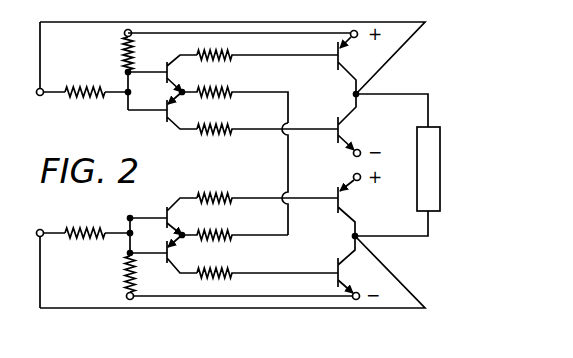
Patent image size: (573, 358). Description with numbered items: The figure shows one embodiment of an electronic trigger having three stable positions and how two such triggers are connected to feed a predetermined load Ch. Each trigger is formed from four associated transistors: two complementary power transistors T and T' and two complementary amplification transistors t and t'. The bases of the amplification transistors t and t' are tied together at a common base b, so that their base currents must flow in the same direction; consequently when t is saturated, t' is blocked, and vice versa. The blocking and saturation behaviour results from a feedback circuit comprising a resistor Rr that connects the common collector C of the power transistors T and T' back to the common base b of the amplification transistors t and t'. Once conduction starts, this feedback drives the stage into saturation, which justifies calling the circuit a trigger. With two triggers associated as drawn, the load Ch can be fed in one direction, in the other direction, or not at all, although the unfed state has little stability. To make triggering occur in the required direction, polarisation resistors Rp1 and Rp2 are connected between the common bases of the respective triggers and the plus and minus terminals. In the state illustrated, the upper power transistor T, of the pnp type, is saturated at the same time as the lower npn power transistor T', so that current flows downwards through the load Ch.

The polarisation resistor Rp1 is at (108, 51).
The feedback resistor Rr is at (85, 107).
The common base b is at (147, 90).
The amplification transistor t is at (182, 75).
The complementary amplification transistor t' is at (182, 110).
The power transistor T is at (348, 63).
The complementary power transistor T' is at (355, 125).
The common collector C is at (382, 107).
The load Ch is at (413, 181).
The polarisation resistor Rp2 is at (111, 278).